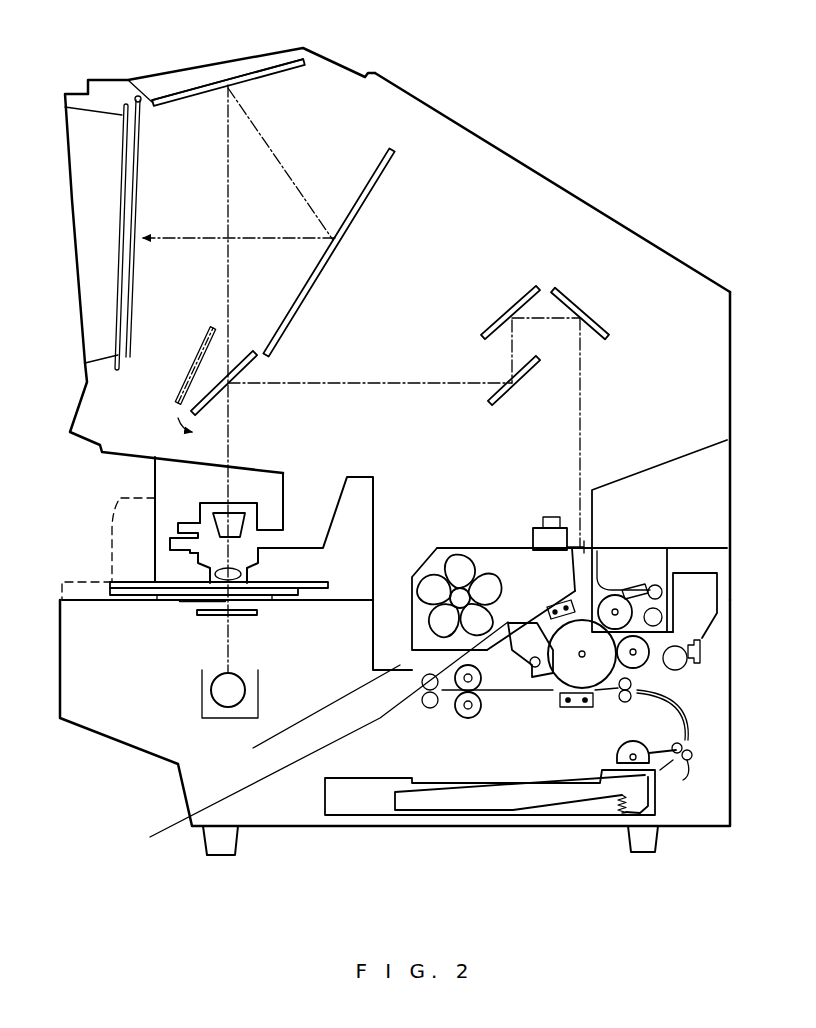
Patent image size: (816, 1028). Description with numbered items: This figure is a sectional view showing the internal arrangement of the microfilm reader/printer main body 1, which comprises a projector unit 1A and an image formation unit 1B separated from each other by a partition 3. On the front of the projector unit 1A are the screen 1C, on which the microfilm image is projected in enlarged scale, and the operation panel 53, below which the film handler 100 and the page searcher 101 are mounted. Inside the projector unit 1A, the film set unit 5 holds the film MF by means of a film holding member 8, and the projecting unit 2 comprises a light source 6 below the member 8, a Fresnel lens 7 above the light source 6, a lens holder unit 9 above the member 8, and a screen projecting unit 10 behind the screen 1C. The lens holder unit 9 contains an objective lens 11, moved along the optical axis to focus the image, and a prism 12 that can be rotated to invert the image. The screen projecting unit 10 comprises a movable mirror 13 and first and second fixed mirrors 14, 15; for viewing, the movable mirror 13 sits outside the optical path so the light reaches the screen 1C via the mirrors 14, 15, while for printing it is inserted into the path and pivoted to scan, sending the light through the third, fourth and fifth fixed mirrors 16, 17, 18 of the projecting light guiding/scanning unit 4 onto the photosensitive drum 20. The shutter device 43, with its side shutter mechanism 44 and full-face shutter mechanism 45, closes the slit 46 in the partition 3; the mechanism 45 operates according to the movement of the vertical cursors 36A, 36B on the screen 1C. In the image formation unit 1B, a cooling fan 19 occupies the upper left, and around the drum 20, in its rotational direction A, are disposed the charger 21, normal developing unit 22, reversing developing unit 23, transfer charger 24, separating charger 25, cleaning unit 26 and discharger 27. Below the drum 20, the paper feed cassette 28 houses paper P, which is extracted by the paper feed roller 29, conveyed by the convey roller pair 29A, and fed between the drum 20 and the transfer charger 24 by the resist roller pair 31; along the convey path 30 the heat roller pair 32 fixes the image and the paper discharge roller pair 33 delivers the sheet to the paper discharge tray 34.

The microfilm reader/printer main body 1 is at (738, 293).
The projector unit 1A is at (512, 150).
The image formation unit 1B is at (732, 740).
The screen 1C is at (112, 247).
The projecting unit 2 is at (262, 490).
The partition 3 is at (482, 548).
The projecting light guiding/scanning unit 4 is at (600, 345).
The film set unit 5 is at (158, 608).
The light source 6 is at (212, 690).
The Fresnel lens 7 is at (250, 616).
The film holding member 8 is at (312, 582).
The lens holder unit 9 is at (197, 510).
The screen projecting unit 10 is at (255, 60).
The objective lens 11 is at (245, 572).
The prism 12 is at (220, 512).
The movable mirror 13 is at (205, 412).
The first fixed mirror 14 is at (168, 92).
The second fixed mirror 15 is at (370, 193).
The third fixed mirror 16 is at (515, 395).
The fourth fixed mirror 17 is at (500, 305).
The fifth fixed mirror 18 is at (590, 305).
The cooling fan 19 is at (462, 565).
The photosensitive drum 20 is at (562, 704).
The charger 21 is at (565, 603).
The normal developing unit 22 is at (667, 560).
The reversing developing unit 23 is at (708, 572).
The transfer charger 24 is at (618, 700).
The separating charger 25 is at (573, 708).
The cleaning unit 26 is at (533, 660).
The discharger 27 is at (548, 612).
The paper feed cassette 28 is at (448, 820).
The paper feed roller 29 is at (615, 756).
The convey roller pair 29A is at (684, 762).
The convey path 30 is at (540, 692).
The resist roller pair 31 is at (633, 700).
The heat roller pair 32 is at (478, 712).
The paper discharge roller pair 33 is at (420, 698).
The paper discharge tray 34 is at (352, 727).
The cursor 36A is at (138, 208).
The cursor 36B is at (133, 272).
The shutter device 43 is at (535, 540).
The side shutter mechanism 44 is at (591, 546).
The full-face shutter mechanism 45 is at (572, 550).
The slit 46 is at (596, 548).
The operation panel 53 is at (75, 410).
The film handler 100 is at (112, 530).
The page searcher 101 is at (95, 582).
The rotational direction arrow A is at (600, 668).
The microfilm MF is at (195, 603).
The paper P is at (457, 790).